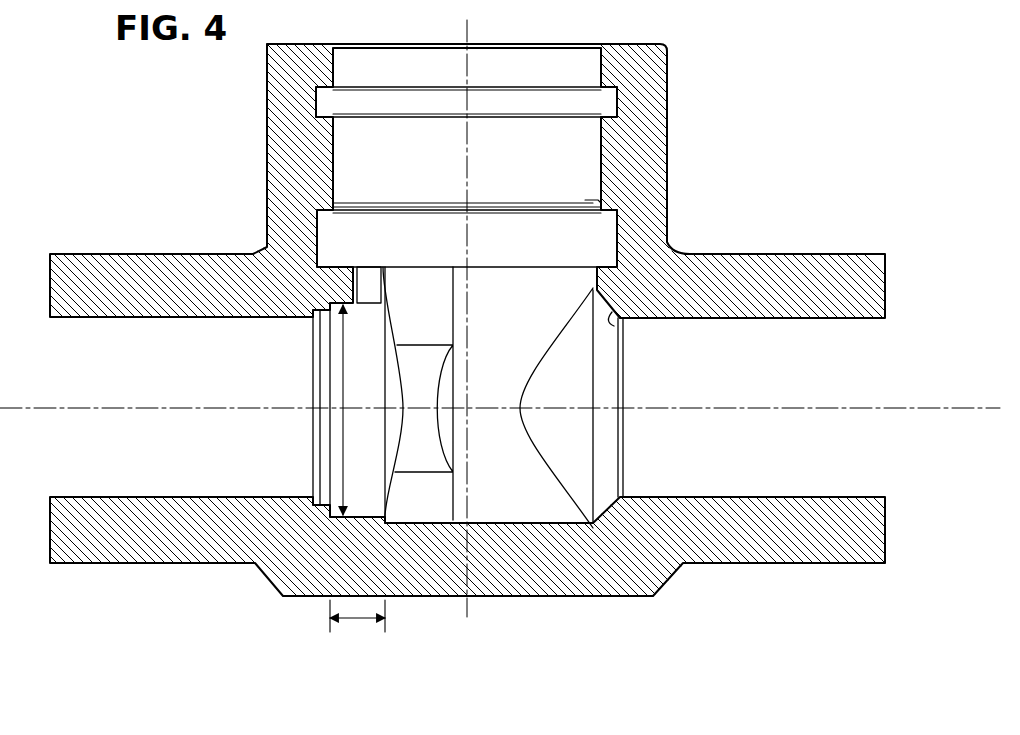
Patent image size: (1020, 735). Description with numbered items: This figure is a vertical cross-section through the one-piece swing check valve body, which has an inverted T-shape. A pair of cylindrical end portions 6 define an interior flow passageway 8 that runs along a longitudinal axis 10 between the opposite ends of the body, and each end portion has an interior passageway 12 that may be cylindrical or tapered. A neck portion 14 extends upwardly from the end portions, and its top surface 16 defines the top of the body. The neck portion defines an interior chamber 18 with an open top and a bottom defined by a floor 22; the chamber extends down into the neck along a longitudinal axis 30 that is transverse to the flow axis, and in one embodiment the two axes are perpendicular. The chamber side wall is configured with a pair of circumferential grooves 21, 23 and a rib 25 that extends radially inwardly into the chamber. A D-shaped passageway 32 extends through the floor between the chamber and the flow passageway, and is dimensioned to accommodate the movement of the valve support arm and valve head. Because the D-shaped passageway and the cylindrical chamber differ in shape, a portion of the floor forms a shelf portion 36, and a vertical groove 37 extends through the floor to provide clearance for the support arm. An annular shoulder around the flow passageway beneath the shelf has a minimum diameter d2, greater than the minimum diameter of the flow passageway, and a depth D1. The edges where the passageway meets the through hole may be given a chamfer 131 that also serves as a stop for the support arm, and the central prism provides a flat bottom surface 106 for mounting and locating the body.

The top surface 16 is at (648, 44).
The neck portion 14 is at (667, 128).
The interior chamber 18 is at (541, 148).
The circumferential groove 21 is at (612, 100).
The circumferential groove 23 is at (588, 232).
The rib 25 is at (598, 199).
The D-shaped passageway 32 is at (487, 292).
The shelf portion 36 is at (338, 263).
The floor 22 is at (308, 365).
The vertical groove 37 is at (365, 275).
The chamfer 131 is at (614, 324).
The longitudinal axis 10 is at (897, 403).
The longitudinal axis 30 is at (470, 615).
The interior passageway 12 is at (90, 460).
The cylindrical end portion 6 is at (126, 565).
The interior flow passageway 8 is at (710, 476).
The flat bottom surface 106 is at (625, 597).
The depth D1 is at (362, 622).
The minimum diameter d2 is at (343, 425).